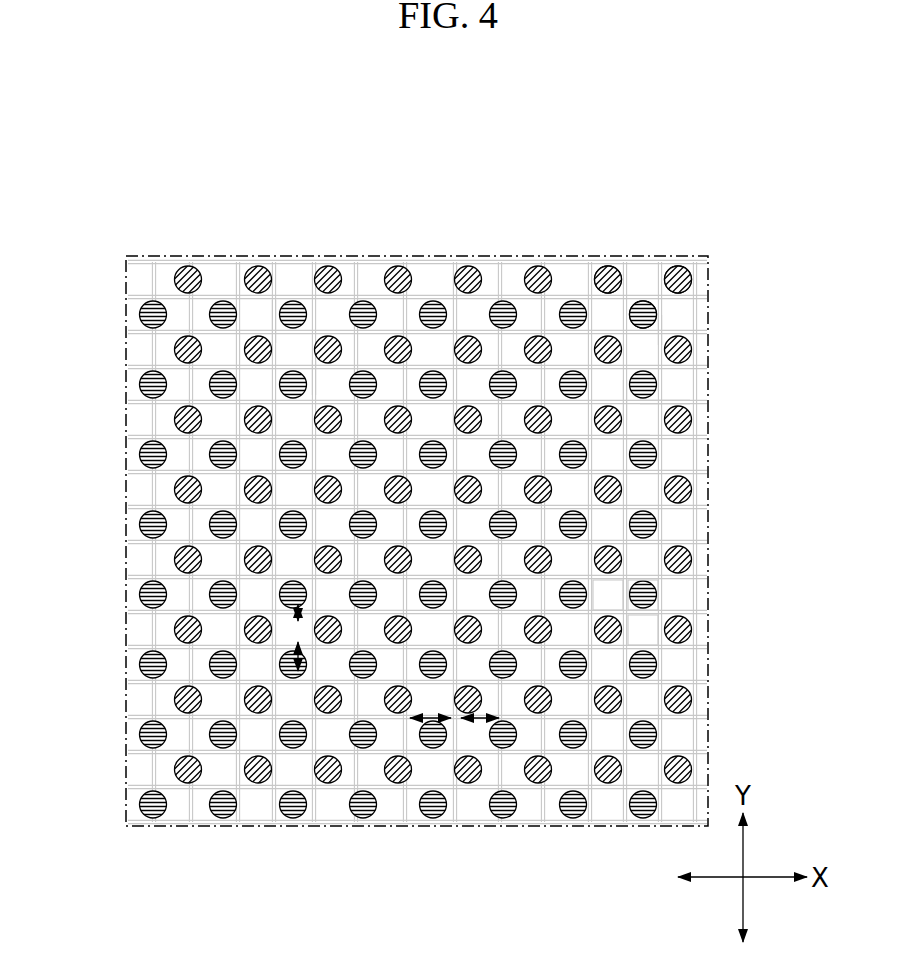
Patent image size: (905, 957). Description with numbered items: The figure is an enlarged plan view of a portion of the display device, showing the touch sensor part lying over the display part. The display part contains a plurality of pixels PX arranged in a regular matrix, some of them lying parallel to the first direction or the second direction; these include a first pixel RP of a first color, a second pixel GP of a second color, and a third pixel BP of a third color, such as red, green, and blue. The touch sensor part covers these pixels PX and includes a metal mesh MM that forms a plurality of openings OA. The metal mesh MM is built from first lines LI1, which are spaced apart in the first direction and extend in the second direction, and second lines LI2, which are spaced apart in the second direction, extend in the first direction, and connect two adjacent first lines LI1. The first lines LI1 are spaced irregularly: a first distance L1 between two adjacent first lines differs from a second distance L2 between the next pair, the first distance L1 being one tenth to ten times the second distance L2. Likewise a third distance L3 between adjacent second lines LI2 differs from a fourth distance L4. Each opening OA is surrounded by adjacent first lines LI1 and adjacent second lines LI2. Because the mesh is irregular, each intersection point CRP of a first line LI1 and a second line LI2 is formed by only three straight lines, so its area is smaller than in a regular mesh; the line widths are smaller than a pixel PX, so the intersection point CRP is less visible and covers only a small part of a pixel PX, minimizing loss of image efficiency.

The metal mesh MM is at (178, 472).
The pixel PX is at (591, 198).
The first pixel RP is at (604, 269).
The second pixel GP is at (643, 305).
The third pixel BP is at (679, 267).
The intersection point CRP is at (322, 388).
The first line LI1 is at (625, 398).
The second line LI2 is at (603, 436).
The opening OA is at (616, 596).
The first distance L1 is at (432, 725).
The second distance L2 is at (482, 725).
The third distance L3 is at (298, 615).
The fourth distance L4 is at (293, 663).